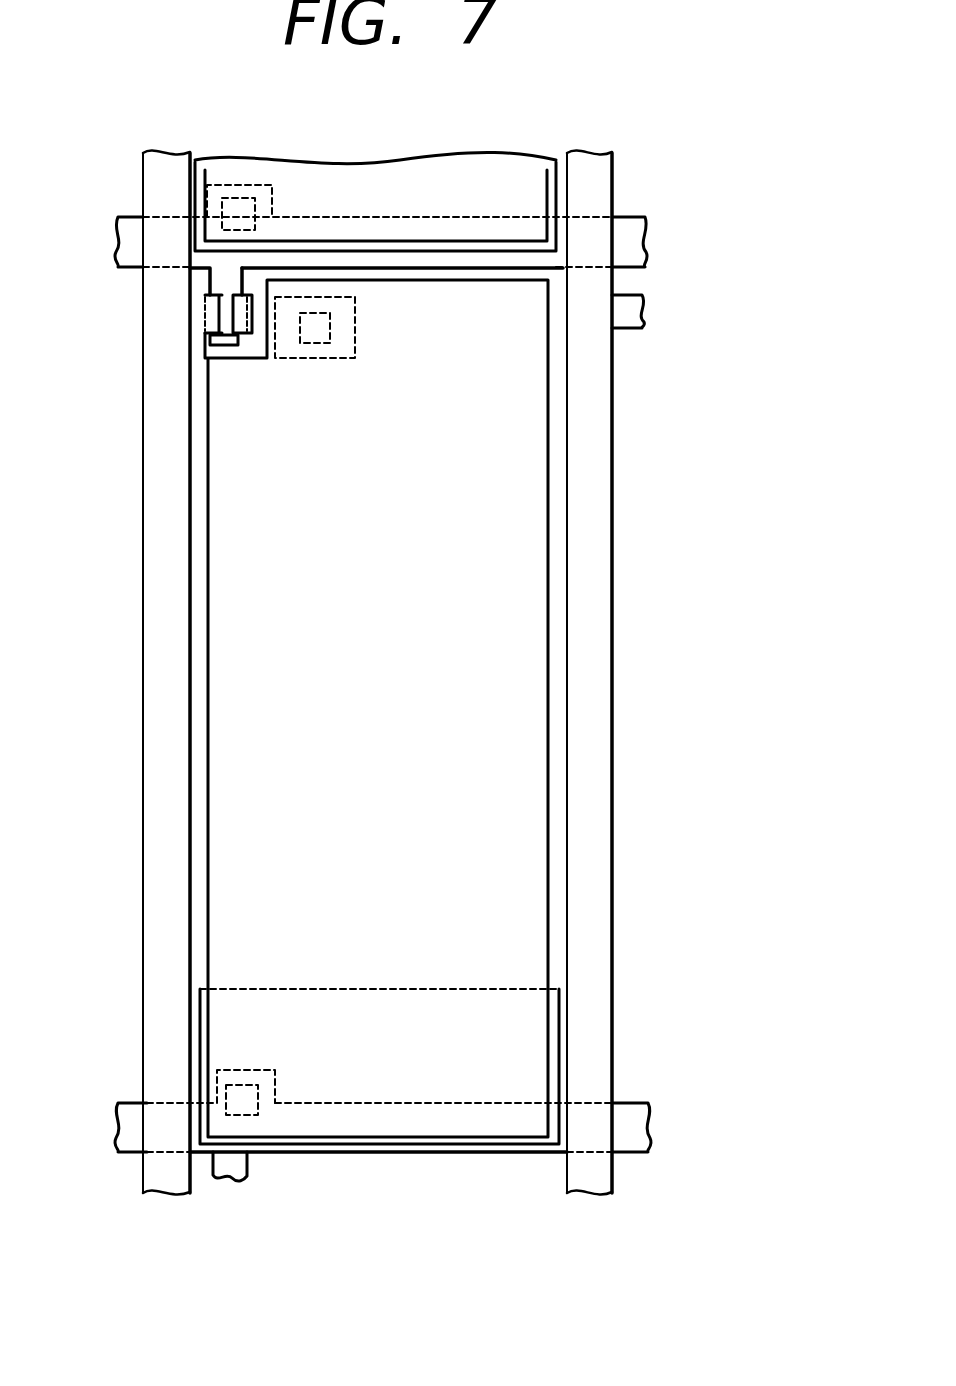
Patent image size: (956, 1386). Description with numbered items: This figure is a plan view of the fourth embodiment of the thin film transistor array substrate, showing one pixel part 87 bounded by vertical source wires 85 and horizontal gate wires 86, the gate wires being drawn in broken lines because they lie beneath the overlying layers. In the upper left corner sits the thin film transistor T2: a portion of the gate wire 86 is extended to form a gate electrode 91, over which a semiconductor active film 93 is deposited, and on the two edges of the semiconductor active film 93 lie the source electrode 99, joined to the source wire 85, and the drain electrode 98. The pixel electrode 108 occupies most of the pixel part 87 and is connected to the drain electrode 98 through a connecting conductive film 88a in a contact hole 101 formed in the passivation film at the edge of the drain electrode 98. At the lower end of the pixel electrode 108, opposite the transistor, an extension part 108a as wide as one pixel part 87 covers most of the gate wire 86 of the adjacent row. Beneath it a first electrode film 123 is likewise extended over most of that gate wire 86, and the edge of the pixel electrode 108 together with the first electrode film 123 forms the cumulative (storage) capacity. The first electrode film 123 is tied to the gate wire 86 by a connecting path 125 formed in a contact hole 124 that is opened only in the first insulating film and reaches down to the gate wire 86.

The source wire 85 is at (165, 750).
The gate wire 86 is at (632, 233).
The pixel part 87 is at (566, 556).
The connecting conductive film 88a is at (330, 330).
The gate electrode 91 is at (225, 277).
The semiconductor active film 93 is at (205, 341).
The drain electrode 98 is at (245, 313).
The source electrode 99 is at (205, 318).
The contact hole 101 is at (313, 340).
The pixel electrode 108 is at (533, 858).
The extension part 108a is at (535, 1017).
The first electrode film 123 is at (556, 1080).
The contact hole 124 is at (235, 1108).
The connecting path 125 is at (252, 1098).
The thin film transistor T2 is at (170, 334).